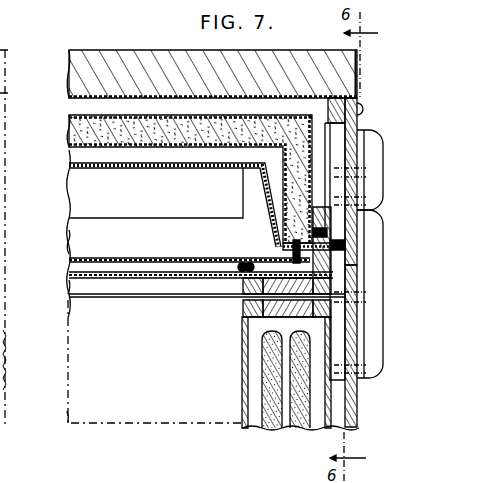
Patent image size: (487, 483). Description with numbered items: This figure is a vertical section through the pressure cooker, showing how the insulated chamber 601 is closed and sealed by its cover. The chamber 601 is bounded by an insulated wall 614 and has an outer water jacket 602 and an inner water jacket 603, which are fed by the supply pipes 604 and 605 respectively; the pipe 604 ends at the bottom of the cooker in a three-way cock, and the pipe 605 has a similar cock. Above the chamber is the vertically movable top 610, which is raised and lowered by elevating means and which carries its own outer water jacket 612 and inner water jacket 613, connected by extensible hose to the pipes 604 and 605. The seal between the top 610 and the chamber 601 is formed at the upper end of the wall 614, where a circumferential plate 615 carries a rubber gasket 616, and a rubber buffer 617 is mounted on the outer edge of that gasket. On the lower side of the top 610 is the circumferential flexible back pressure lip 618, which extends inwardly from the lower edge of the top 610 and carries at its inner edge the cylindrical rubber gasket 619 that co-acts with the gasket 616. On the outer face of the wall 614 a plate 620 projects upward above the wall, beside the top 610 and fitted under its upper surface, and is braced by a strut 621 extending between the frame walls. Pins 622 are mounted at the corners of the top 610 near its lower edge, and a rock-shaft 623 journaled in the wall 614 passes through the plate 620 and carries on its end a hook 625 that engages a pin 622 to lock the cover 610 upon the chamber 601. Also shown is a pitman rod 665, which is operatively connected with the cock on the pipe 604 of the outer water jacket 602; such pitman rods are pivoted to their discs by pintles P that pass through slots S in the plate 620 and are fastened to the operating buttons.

The insulated chamber 601 is at (142, 410).
The outer water jacket 602 is at (318, 417).
The inner water jacket 603 is at (250, 417).
The supply pipe 604 is at (267, 340).
The supply pipe 605 is at (283, 420).
The vertically movable top 610 is at (125, 55).
The outer water jacket 612 is at (68, 103).
The inner water jacket 613 is at (72, 155).
The insulated wall 614 is at (328, 285).
The circumferential plate 615 is at (193, 297).
The rubber gasket 616 is at (293, 252).
The rubber buffer 617 is at (330, 263).
The circumferential flexible back pressure lip 618 is at (240, 257).
The cylindrical rubber gasket 619 is at (238, 262).
The plate 620 is at (355, 413).
The strut 621 is at (358, 100).
The pin 622 is at (352, 213).
The rock-shaft 623 is at (146, 298).
The hook 625 is at (313, 200).
The pitman rod 665 is at (67, 240).
The slot S is at (347, 197).
The pintle P is at (362, 197).